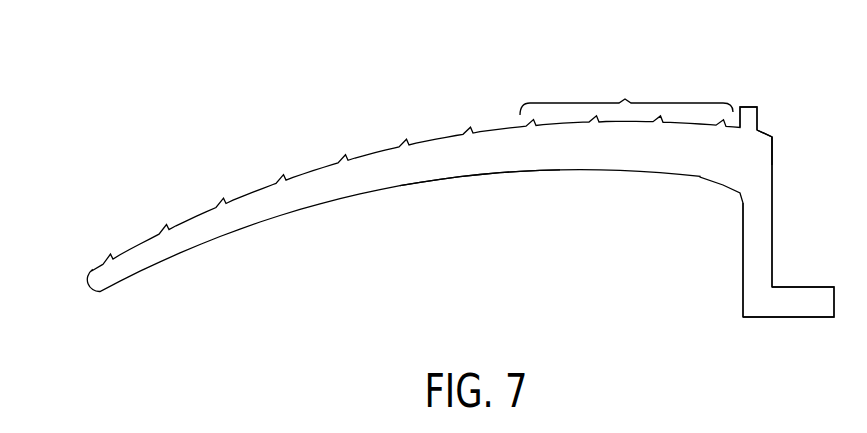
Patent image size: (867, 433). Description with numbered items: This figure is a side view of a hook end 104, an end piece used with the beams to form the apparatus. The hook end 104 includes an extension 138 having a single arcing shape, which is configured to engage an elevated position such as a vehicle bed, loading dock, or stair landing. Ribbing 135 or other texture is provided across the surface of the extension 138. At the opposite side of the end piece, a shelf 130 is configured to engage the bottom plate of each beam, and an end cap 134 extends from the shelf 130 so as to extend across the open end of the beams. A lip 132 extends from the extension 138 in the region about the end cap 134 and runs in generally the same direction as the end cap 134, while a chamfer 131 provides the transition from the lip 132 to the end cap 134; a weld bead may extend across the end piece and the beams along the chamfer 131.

The hook end 104 is at (401, 115).
The shelf 130 is at (797, 302).
The chamfer 131 is at (772, 137).
The lip 132 is at (748, 107).
The end cap 134 is at (767, 220).
The ribbing 135 is at (626, 87).
The extension 138 is at (455, 167).